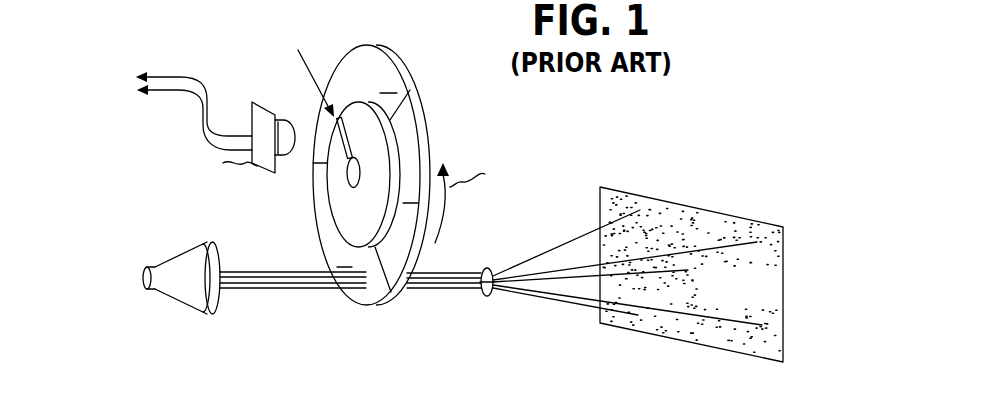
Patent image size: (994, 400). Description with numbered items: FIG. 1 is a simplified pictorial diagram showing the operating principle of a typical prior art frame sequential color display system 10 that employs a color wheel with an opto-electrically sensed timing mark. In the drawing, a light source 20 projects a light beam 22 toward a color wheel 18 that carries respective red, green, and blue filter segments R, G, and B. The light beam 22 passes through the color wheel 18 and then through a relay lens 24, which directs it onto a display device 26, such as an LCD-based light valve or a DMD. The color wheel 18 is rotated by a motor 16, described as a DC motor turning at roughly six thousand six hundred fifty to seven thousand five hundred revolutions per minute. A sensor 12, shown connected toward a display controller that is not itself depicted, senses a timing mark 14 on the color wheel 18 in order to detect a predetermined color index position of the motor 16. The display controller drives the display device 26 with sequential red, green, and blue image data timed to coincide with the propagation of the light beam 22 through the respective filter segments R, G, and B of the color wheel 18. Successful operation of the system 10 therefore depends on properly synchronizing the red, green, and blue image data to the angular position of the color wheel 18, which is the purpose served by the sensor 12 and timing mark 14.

The frame sequential color display system 10 is at (556, 129).
The sensor 12 is at (287, 120).
The timing mark 14 is at (346, 140).
The motor 16 is at (314, 222).
The color wheel 18 is at (413, 78).
The light source 20 is at (180, 262).
The light beam 22 is at (442, 290).
The relay lens 24 is at (488, 265).
The display device 26 is at (696, 207).